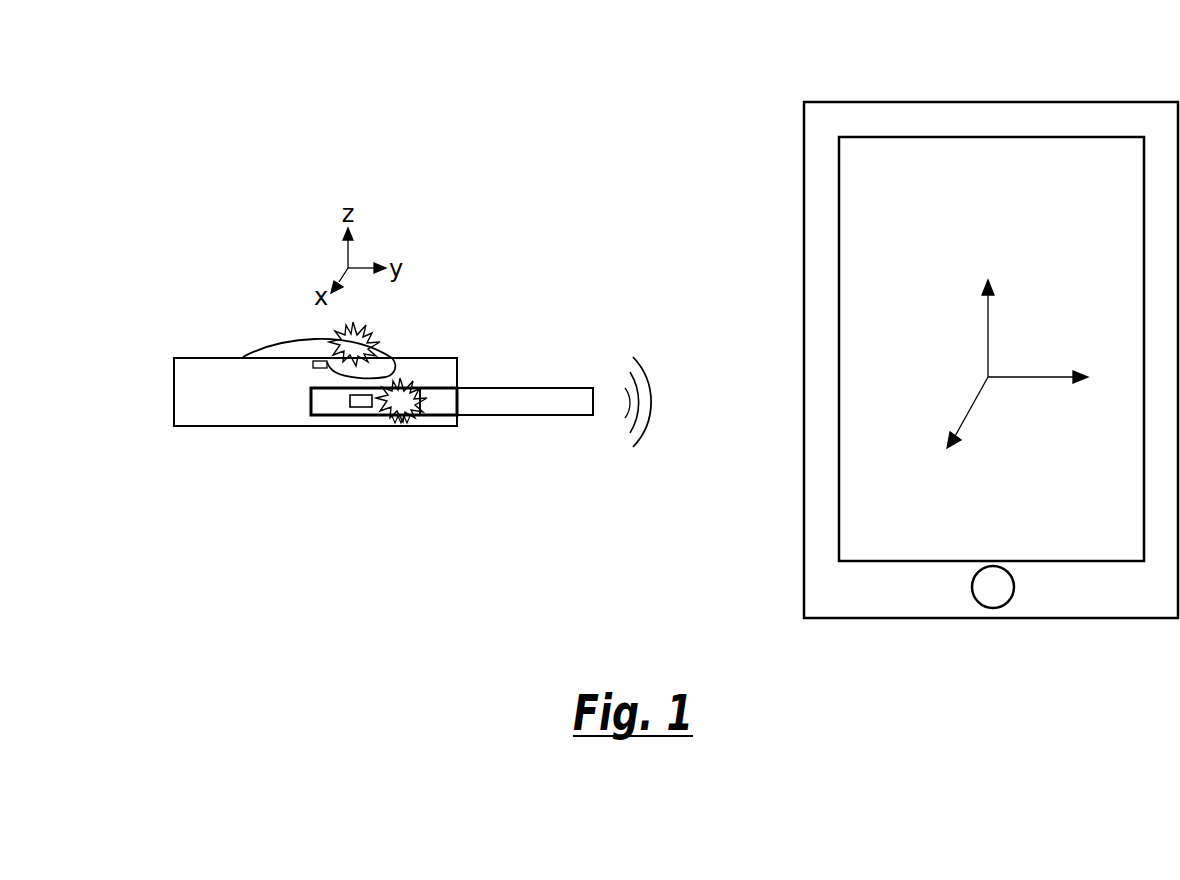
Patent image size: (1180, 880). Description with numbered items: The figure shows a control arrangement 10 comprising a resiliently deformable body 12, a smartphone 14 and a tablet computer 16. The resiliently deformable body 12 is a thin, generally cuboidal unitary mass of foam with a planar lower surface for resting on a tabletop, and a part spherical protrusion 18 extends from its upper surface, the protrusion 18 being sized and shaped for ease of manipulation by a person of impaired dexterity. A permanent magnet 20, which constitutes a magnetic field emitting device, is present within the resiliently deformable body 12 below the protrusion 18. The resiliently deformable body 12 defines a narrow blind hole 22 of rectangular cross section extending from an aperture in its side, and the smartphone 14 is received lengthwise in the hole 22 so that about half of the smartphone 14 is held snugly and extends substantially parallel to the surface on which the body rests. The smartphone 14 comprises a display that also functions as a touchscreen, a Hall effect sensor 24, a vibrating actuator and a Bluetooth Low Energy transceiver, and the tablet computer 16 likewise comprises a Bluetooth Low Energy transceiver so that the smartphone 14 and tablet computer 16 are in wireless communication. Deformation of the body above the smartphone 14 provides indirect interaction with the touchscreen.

The control arrangement 10 is at (556, 206).
The resiliently deformable body 12 is at (205, 370).
The smartphone 14 is at (495, 402).
The tablet computer 16 is at (1007, 113).
The part spherical protrusion 18 is at (278, 353).
The permanent magnet 20 is at (392, 352).
The blind hole 22 is at (311, 416).
The Hall effect sensor 24 is at (362, 407).